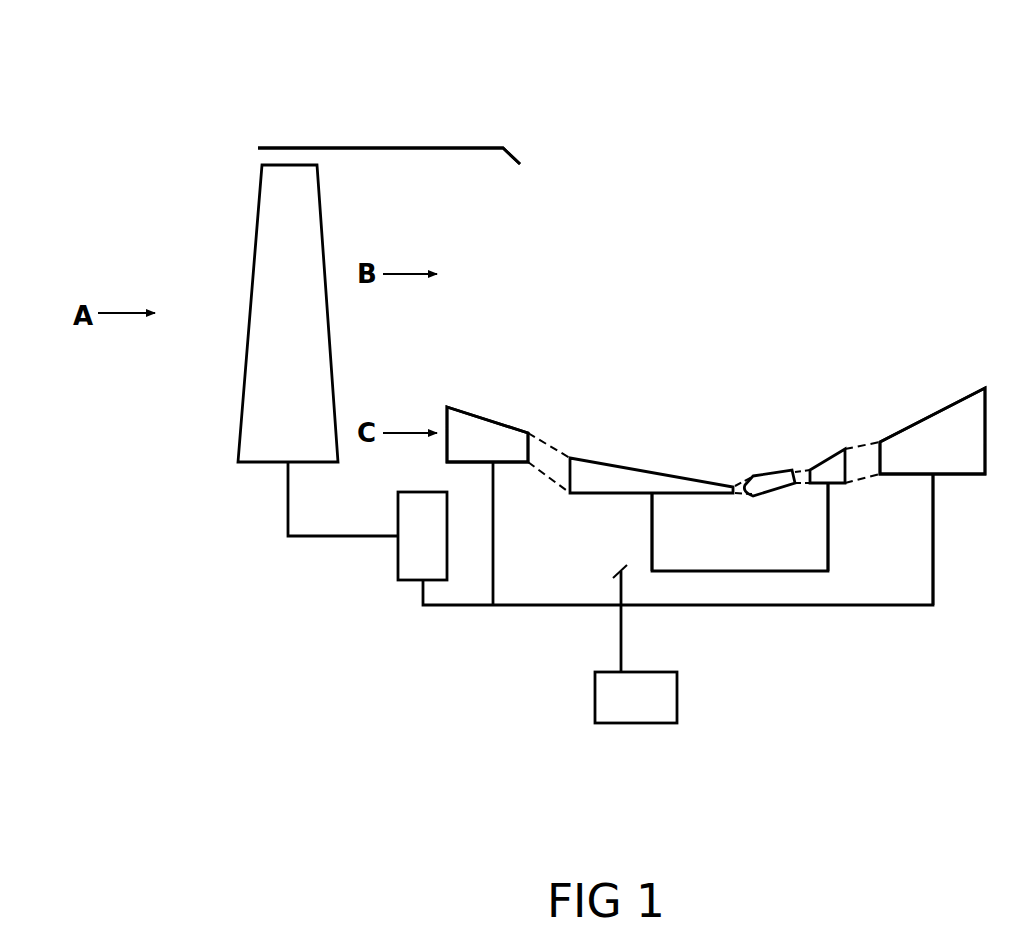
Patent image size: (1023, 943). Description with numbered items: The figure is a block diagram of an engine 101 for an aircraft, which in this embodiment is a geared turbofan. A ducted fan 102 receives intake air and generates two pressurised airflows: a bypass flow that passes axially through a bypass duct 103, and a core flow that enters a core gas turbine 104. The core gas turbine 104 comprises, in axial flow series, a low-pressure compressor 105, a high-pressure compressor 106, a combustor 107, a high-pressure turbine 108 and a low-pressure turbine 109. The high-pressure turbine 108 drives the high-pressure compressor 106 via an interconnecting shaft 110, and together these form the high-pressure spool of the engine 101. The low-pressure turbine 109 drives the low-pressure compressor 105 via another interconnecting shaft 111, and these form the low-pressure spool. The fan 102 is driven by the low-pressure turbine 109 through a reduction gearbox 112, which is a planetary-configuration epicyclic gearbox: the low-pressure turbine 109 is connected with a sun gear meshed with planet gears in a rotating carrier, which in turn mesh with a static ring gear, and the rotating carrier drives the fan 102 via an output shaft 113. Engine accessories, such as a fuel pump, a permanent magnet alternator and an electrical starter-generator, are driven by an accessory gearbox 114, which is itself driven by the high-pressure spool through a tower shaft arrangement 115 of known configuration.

The engine 101 is at (100, 62).
The ducted fan 102 is at (270, 190).
The bypass duct 103 is at (493, 147).
The core gas turbine 104 is at (863, 332).
The low-pressure compressor 105 is at (508, 422).
The high-pressure compressor 106 is at (618, 486).
The combustor 107 is at (750, 478).
The high-pressure turbine 108 is at (810, 470).
The low-pressure turbine 109 is at (913, 422).
The interconnecting shaft 110 is at (832, 545).
The interconnecting shaft 111 is at (935, 590).
The reduction gearbox 112 is at (398, 566).
The output shaft 113 is at (288, 528).
The accessory gearbox 114 is at (595, 718).
The tower shaft arrangement 115 is at (617, 618).